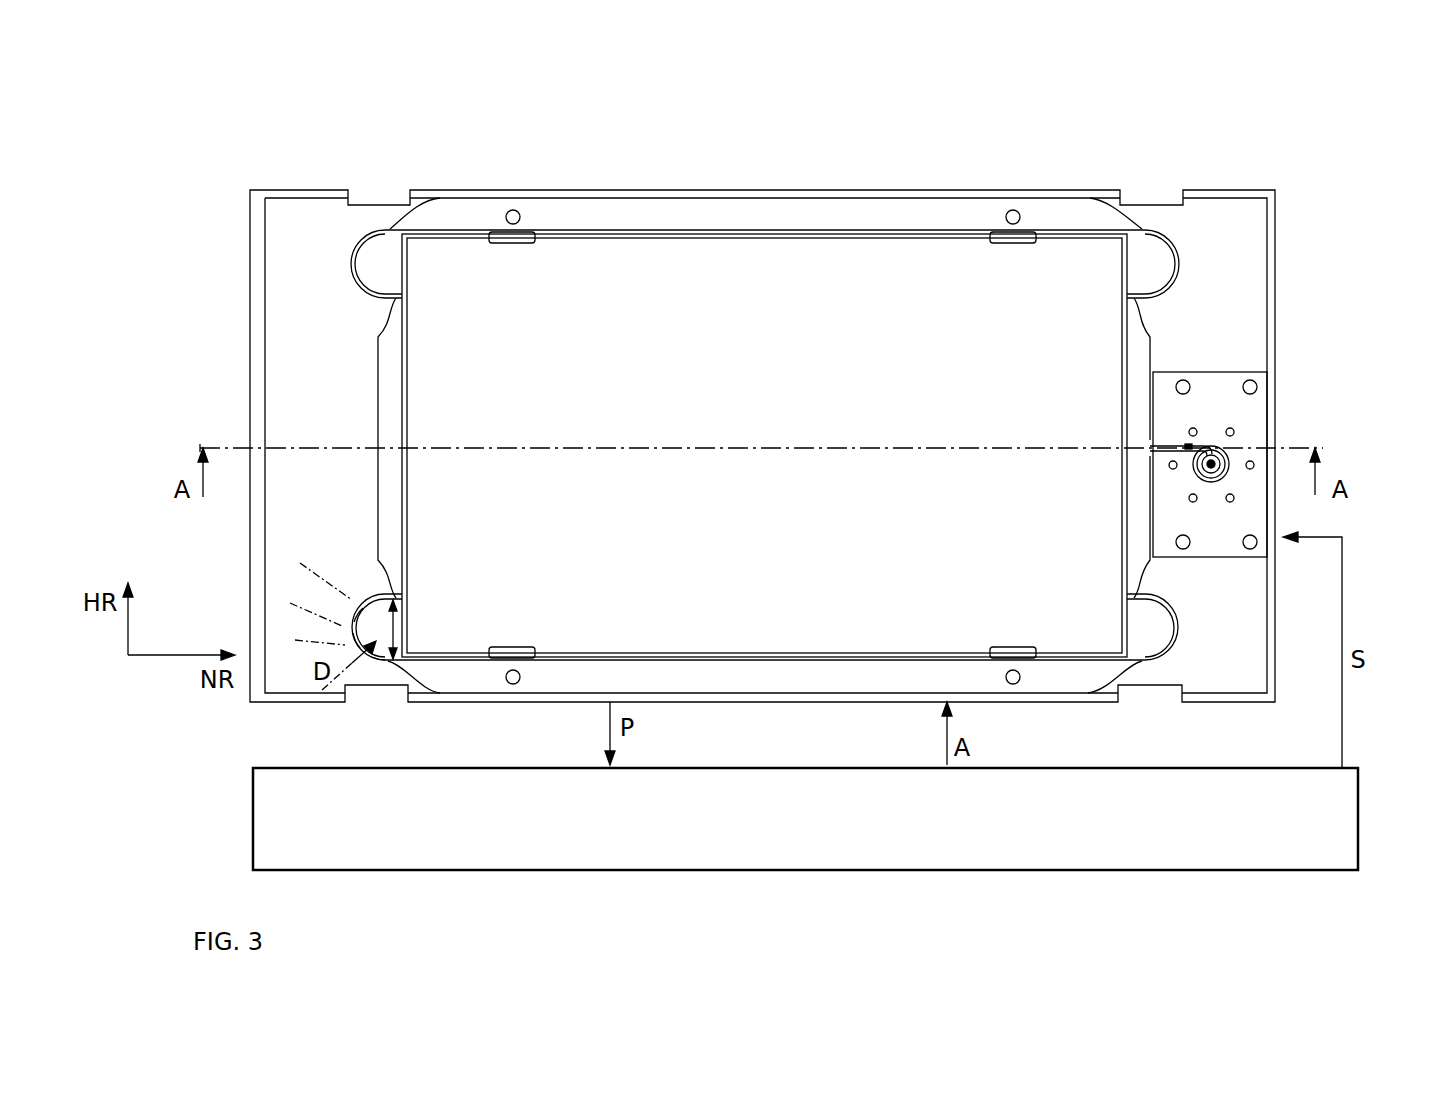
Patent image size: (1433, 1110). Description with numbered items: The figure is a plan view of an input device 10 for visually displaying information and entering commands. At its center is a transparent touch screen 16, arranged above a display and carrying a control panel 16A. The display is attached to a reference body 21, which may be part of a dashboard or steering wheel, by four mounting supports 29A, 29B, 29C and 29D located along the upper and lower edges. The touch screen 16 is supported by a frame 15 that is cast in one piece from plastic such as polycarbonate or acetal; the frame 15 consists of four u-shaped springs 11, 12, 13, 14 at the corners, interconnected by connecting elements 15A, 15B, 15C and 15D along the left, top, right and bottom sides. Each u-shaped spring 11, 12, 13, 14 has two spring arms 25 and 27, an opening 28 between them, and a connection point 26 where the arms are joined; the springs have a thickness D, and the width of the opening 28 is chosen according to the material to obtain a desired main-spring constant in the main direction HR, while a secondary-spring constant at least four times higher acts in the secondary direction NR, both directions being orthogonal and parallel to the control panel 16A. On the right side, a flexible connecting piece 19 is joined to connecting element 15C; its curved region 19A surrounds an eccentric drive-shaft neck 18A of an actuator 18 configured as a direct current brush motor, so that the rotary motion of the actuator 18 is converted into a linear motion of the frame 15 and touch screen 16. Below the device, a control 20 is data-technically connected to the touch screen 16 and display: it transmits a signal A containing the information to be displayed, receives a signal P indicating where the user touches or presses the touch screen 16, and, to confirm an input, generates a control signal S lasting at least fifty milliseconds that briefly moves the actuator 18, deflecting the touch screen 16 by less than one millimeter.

The input device 10 is at (1007, 162).
The u-shaped spring 11 is at (1175, 264).
The u-shaped spring 12 is at (358, 248).
The u-shaped spring 13 is at (382, 595).
The u-shaped spring 14 is at (1171, 633).
The frame 15 is at (805, 430).
The connecting element 15A is at (388, 357).
The connecting element 15B is at (778, 215).
The connecting element 15C is at (1138, 350).
The connecting element 15D is at (792, 675).
The touch screen 16 is at (613, 293).
The control panel 16A is at (885, 295).
The actuator 18 is at (1233, 385).
The eccentric drive-shaft neck 18A is at (1214, 466).
The connecting piece 19 is at (1198, 443).
The curved region 19A is at (1220, 455).
The control 20 is at (770, 831).
The reference body 21 is at (300, 663).
The spring arm 25 is at (356, 613).
The connection point 26 is at (358, 638).
The spring arm 27 is at (382, 663).
The opening 28 is at (395, 627).
The mounting support 29A is at (522, 237).
The mounting support 29B is at (1020, 237).
The mounting support 29C is at (1020, 655).
The mounting support 29D is at (515, 655).